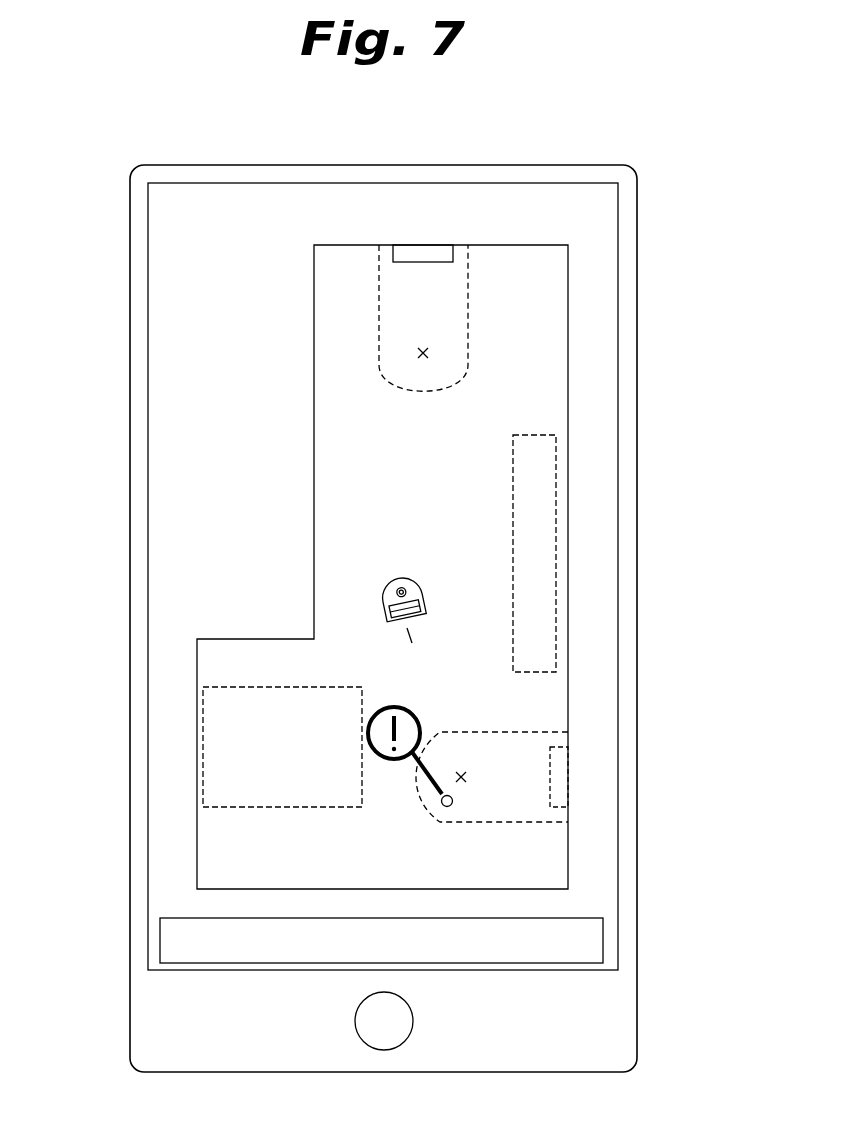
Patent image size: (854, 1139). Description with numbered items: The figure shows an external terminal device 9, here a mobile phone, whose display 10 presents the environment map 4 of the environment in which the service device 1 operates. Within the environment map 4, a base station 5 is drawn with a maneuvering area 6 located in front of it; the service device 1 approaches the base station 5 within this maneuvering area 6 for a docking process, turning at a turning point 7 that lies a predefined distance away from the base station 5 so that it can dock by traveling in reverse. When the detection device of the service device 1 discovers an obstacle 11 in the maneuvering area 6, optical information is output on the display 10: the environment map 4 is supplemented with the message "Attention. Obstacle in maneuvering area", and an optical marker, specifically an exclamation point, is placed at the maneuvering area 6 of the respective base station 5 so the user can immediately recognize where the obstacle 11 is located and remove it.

The service device 1 is at (388, 580).
The environment map 4 is at (301, 333).
The base station 5 is at (403, 253).
The maneuvering area 6 is at (455, 300).
The turning point 7 is at (429, 352).
The external terminal device 9 is at (656, 208).
The display 10 is at (182, 402).
The obstacle 11 is at (527, 482).